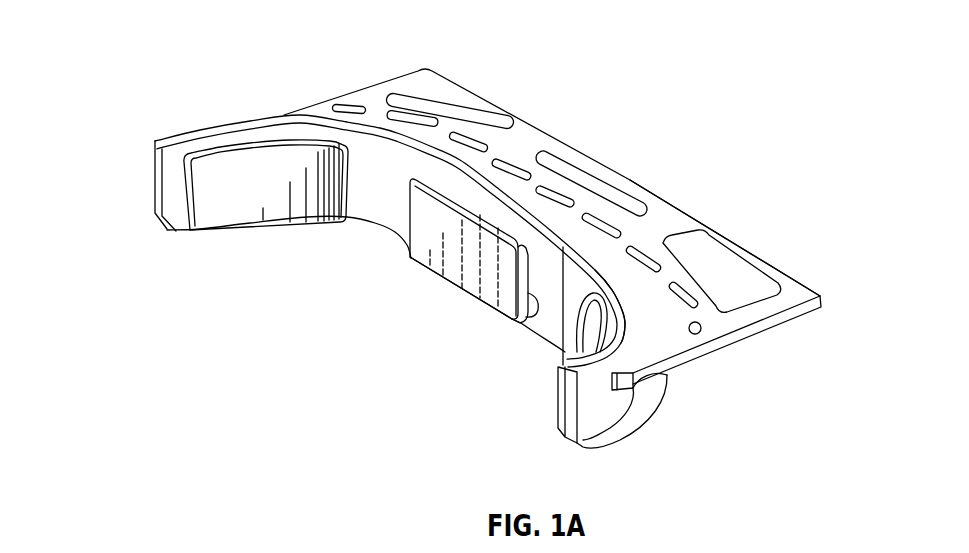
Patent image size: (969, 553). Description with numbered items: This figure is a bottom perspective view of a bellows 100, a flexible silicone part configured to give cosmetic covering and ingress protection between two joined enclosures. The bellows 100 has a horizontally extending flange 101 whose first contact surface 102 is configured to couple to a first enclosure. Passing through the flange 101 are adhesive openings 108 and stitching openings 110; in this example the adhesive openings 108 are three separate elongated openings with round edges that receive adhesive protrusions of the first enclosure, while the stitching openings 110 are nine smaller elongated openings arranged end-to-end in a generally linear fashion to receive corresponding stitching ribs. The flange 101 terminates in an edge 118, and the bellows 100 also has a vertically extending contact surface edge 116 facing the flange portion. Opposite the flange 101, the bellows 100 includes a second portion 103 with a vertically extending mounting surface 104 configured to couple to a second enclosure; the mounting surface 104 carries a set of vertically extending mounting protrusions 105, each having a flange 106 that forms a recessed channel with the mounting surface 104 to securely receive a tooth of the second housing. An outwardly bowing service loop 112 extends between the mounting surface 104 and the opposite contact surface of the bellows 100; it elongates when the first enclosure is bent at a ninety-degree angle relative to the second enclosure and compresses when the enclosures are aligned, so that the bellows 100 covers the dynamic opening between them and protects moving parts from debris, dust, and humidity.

The bellows 100 is at (145, 41).
The flange 101 is at (544, 134).
The first contact surface 102 is at (638, 335).
The second portion 103 is at (498, 316).
The mounting surface 104 is at (380, 213).
The mounting protrusion 105 is at (535, 294).
The flange 106 is at (222, 213).
The adhesive opening 108 is at (455, 109).
The stitching opening 110 is at (418, 115).
The service loop 112 is at (672, 396).
The contact surface edge 116 is at (640, 378).
The edge 118 is at (682, 202).